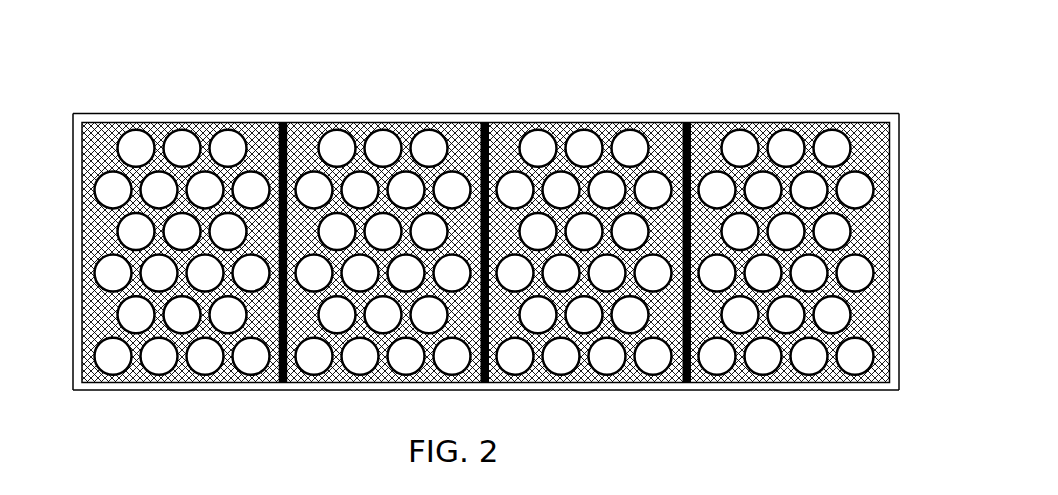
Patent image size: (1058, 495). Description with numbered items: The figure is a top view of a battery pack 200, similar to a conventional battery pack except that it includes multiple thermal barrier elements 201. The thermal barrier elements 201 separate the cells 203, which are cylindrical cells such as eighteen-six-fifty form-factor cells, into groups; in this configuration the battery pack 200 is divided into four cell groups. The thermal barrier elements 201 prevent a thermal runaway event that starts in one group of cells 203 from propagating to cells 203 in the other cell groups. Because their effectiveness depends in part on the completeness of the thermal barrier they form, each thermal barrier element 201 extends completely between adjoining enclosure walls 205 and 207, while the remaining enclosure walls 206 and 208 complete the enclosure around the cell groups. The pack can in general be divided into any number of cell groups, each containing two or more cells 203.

The battery pack 200 is at (700, 70).
The thermal barrier elements 201 is at (486, 245).
The cells 203 is at (227, 316).
The enclosure wall 205 is at (780, 117).
The enclosure wall 206 is at (896, 270).
The enclosure wall 207 is at (370, 389).
The enclosure wall 208 is at (78, 148).